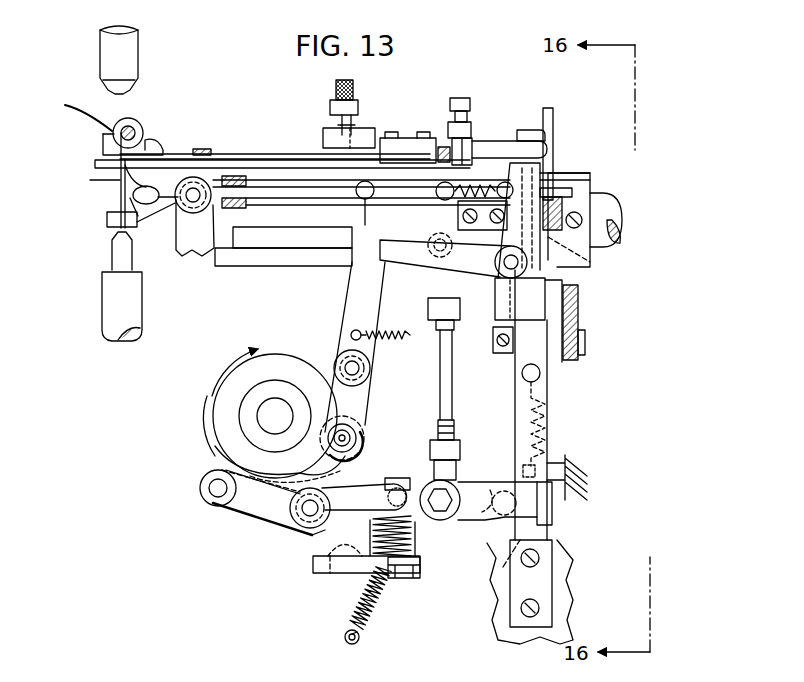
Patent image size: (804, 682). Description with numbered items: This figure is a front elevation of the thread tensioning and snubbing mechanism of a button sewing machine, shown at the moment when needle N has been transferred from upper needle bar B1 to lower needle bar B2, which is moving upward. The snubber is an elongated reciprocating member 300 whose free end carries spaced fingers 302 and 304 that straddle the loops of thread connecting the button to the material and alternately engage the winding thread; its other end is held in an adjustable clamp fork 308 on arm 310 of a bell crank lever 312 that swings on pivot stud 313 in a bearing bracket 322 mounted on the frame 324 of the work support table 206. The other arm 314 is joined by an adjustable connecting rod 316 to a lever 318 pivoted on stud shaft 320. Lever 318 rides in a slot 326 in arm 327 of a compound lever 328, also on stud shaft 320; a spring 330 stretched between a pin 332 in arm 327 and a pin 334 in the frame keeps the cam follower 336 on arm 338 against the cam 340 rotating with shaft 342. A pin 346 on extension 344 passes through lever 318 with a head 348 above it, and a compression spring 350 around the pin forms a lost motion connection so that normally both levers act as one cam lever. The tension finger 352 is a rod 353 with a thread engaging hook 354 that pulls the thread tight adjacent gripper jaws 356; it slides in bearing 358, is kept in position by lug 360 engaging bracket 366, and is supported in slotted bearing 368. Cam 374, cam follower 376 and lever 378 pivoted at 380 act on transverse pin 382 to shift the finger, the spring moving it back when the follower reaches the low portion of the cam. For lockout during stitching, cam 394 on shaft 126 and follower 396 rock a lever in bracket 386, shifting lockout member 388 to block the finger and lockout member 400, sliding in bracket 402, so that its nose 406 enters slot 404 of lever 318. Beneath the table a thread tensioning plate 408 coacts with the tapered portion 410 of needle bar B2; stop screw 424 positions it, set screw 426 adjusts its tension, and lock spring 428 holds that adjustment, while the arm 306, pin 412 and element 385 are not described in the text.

The upper needle bar B1 is at (115, 52).
The lower needle bar B2 is at (126, 308).
The needle N is at (120, 196).
The shaft 126 is at (603, 205).
The work support table 206 is at (318, 266).
The snubber member 300 is at (168, 150).
The first finger 302 is at (116, 141).
The second finger 304 is at (148, 135).
The arm 306 is at (202, 240).
The adjustable clamp fork 308 is at (406, 147).
The arm of bell crank lever 310 is at (552, 180).
The bell crank lever 312 is at (545, 166).
The pivot stud 313 is at (562, 282).
The arm of bell crank lever 314 is at (472, 262).
The adjustable connecting rod 316 is at (446, 404).
The lever 318 is at (416, 470).
The stud shaft 320 is at (308, 520).
The bearing bracket 322 is at (408, 254).
The frame 324 is at (292, 247).
The slot 326 is at (330, 566).
The arm of compound lever 327 is at (350, 512).
The compound lever 328 is at (246, 518).
The spring 330 is at (370, 600).
The pin 332 is at (355, 503).
The pin 334 is at (356, 643).
The cam follower 336 is at (206, 482).
The arm of compound lever 338 is at (250, 497).
The cam 340 is at (226, 427).
The shaft 342 is at (276, 414).
The extension 344 is at (405, 578).
The pin 346 is at (412, 528).
The head 348 is at (396, 478).
The compression spring 350 is at (418, 550).
The tension finger 352 is at (326, 160).
The rod 353 is at (574, 193).
The thread engaging hook 354 is at (120, 180).
The gripper jaws 356 is at (108, 226).
The bearing 358 is at (228, 178).
The lug 360 is at (444, 195).
The bracket 366 is at (358, 128).
The slotted bearing 368 is at (500, 165).
The cam 374 is at (220, 396).
The cam follower 376 is at (356, 436).
The lever 378 is at (362, 333).
The pivot 380 is at (358, 368).
The transverse pin 382 is at (402, 242).
The spring column 385 is at (548, 408).
The bracket 386 is at (578, 305).
The lockout member 388 is at (560, 265).
The cam 394 is at (551, 112).
The cam follower 396 is at (624, 226).
The lockout member 400 is at (538, 524).
The bracket 402 is at (538, 583).
The slot 404 is at (493, 484).
The nose 406 is at (487, 570).
The thread tensioning plate 408 is at (361, 189).
The tapered portion 410 is at (110, 270).
The pin 412 is at (390, 168).
The stop screw 424 is at (462, 98).
The adjustable set screw 426 is at (337, 82).
The lock spring 428 is at (334, 118).